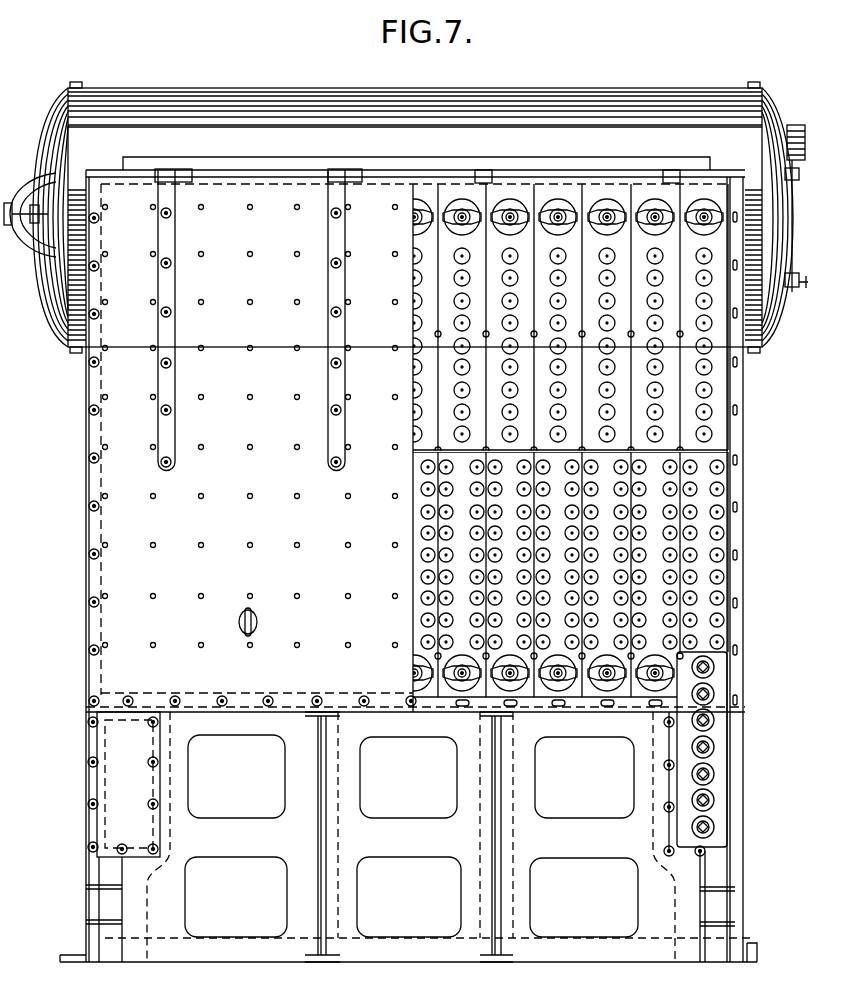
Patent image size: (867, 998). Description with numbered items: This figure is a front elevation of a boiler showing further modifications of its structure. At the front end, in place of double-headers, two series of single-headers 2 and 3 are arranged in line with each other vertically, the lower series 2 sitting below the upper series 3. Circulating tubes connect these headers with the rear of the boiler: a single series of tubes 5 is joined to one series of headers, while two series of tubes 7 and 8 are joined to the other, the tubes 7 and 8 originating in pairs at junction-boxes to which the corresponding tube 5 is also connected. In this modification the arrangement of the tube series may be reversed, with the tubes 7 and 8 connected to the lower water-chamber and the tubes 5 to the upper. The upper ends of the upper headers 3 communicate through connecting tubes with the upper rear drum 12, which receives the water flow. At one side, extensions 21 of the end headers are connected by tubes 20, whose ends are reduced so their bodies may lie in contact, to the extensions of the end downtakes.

The upper rear drum 12 is at (416, 147).
The upper series of single-headers 3 is at (452, 241).
The tubes 5 is at (458, 313).
The lower series of single-headers 2 is at (462, 527).
The tubes 7 is at (420, 576).
The tubes 8 is at (447, 491).
The tubes 20 is at (714, 723).
The extensions of the end headers 21 is at (717, 782).